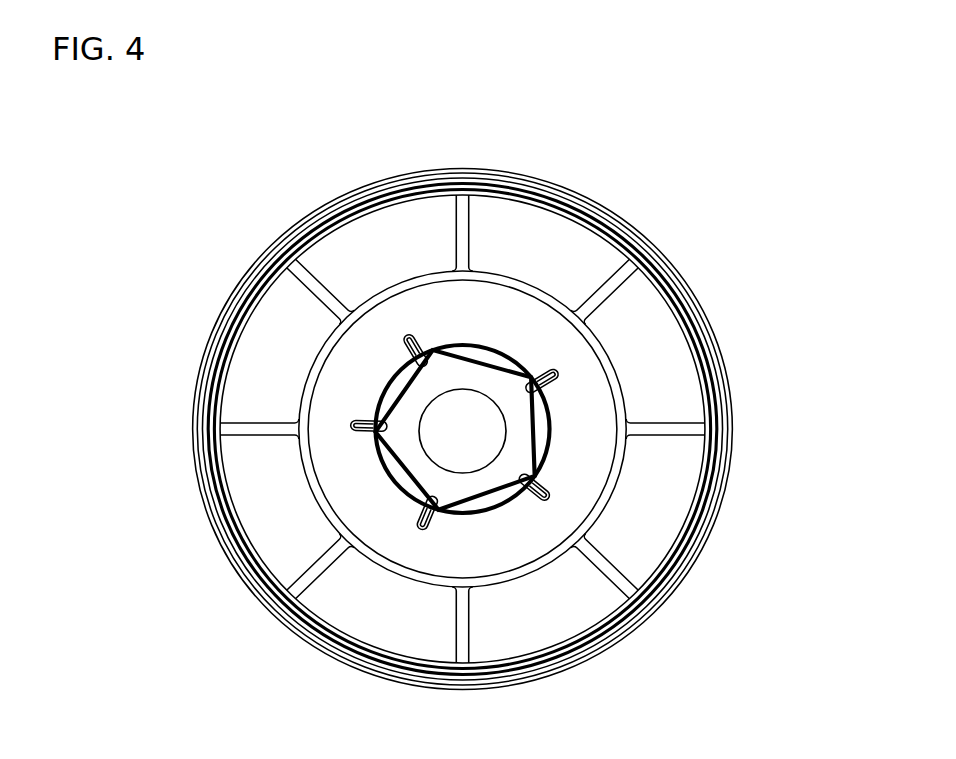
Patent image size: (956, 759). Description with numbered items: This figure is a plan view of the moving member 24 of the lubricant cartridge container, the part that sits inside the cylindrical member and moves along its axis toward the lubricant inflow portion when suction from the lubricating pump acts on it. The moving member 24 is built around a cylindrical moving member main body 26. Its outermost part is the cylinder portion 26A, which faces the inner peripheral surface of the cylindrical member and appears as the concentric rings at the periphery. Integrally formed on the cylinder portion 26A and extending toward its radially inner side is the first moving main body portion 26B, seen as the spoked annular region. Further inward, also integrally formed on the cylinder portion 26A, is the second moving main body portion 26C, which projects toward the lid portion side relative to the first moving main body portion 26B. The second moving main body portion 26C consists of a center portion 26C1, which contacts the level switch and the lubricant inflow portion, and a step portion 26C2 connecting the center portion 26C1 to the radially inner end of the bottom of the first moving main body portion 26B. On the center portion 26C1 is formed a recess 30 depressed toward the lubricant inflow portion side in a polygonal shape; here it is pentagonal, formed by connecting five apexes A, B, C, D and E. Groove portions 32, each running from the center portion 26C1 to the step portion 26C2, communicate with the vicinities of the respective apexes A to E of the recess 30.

The moving member 24 is at (617, 162).
The moving member main body 26 is at (683, 267).
The cylinder portion 26A is at (730, 473).
The first moving main body portion 26B is at (270, 520).
The second moving main body portion 26C is at (403, 327).
The center portion 26C1 is at (490, 378).
The step portion 26C2 is at (370, 477).
The recess 30 is at (487, 350).
The groove portions 32 is at (430, 353).
The apex A is at (542, 367).
The apex B is at (436, 325).
The apex C is at (363, 425).
The apex D is at (430, 507).
The apex E is at (547, 480).